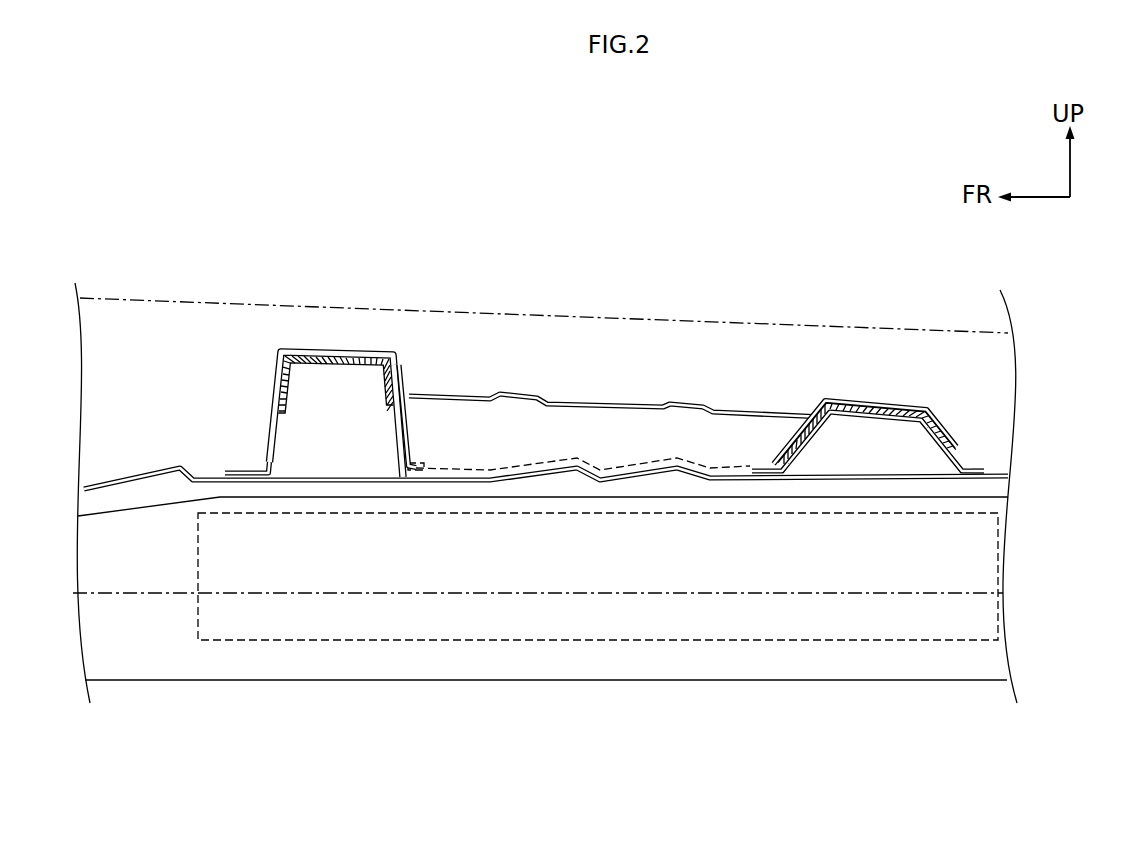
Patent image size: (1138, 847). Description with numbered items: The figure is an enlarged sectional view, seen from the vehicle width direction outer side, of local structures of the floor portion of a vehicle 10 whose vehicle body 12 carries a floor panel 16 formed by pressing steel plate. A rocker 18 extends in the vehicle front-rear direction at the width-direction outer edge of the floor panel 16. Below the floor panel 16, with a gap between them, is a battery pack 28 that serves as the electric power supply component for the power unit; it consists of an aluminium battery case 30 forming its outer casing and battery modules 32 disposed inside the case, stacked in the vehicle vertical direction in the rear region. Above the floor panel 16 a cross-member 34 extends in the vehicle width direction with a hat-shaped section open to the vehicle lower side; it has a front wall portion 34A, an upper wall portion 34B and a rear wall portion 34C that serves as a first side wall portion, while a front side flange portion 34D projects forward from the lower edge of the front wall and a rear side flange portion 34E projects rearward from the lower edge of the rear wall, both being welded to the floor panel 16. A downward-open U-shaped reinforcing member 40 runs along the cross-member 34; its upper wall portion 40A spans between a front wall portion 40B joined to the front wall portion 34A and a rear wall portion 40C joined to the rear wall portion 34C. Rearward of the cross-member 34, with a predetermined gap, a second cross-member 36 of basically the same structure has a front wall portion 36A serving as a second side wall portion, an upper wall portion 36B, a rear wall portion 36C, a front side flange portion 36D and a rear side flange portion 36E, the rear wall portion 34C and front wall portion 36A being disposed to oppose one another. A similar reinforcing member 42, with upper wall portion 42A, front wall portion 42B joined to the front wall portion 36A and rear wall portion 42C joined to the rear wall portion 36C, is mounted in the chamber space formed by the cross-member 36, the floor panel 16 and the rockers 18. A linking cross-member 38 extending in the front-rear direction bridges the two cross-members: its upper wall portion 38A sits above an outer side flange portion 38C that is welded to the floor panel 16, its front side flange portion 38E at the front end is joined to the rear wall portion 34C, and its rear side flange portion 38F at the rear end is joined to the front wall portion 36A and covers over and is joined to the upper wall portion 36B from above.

The vehicle 10 is at (808, 163).
The vehicle body 12 is at (720, 742).
The floor panel 16 is at (1012, 471).
The rocker 18 is at (529, 336).
The battery pack 28 is at (495, 698).
The battery case 30 is at (240, 660).
The battery module 32 is at (420, 642).
The cross-member 34 is at (335, 387).
The front wall portion 34A is at (272, 415).
The upper wall portion 34B is at (336, 347).
The rear wall portion 34C is at (394, 462).
The front side flange portion 34D is at (237, 468).
The rear side flange portion 34E is at (428, 462).
The cross-member 36 is at (896, 403).
The front wall portion 36A is at (800, 440).
The upper wall portion 36B is at (882, 410).
The rear wall portion 36C is at (937, 430).
The front side flange portion 36D is at (757, 466).
The rear side flange portion 36E is at (985, 467).
The linking cross-member 38 is at (678, 394).
The upper wall portion 38A is at (548, 394).
The outer side flange portion 38C is at (520, 462).
The front side flange portion 38E is at (409, 376).
The rear side flange portion 38F is at (834, 398).
The reinforcing member 40 is at (336, 459).
The upper wall portion 40A is at (335, 366).
The front wall portion 40B is at (292, 396).
The rear wall portion 40C is at (388, 397).
The reinforcing member 42 is at (880, 495).
The upper wall portion 42A is at (893, 431).
The front wall portion 42B is at (813, 448).
The rear wall portion 42C is at (938, 448).